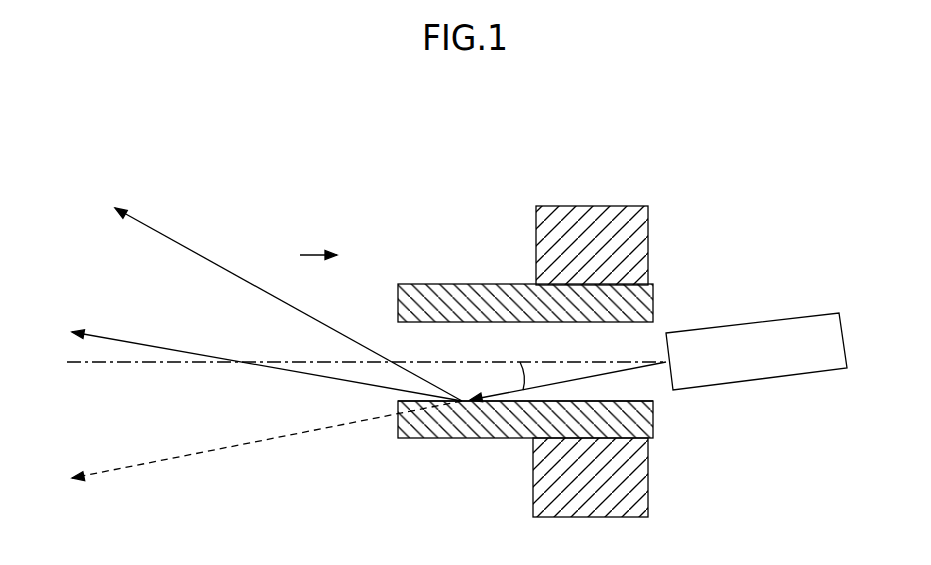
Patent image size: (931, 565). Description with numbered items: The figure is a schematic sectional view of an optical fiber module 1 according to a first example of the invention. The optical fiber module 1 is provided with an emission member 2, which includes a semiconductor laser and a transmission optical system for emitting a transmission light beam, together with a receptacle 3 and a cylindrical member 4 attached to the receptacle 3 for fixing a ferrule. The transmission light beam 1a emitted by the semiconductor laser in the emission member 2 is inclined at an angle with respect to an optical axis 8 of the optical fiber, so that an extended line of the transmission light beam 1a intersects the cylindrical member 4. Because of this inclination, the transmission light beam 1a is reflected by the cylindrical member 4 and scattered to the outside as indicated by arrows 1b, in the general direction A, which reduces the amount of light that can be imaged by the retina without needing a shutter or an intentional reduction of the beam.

The optical fiber module 1 is at (407, 311).
The transmission light beam 1a is at (652, 397).
The arrows 1b is at (150, 343).
The emission member 2 is at (747, 347).
The receptacle 3 is at (636, 238).
The cylindrical member 4 is at (508, 305).
The optical axis 8 is at (145, 362).
The direction A is at (310, 253).